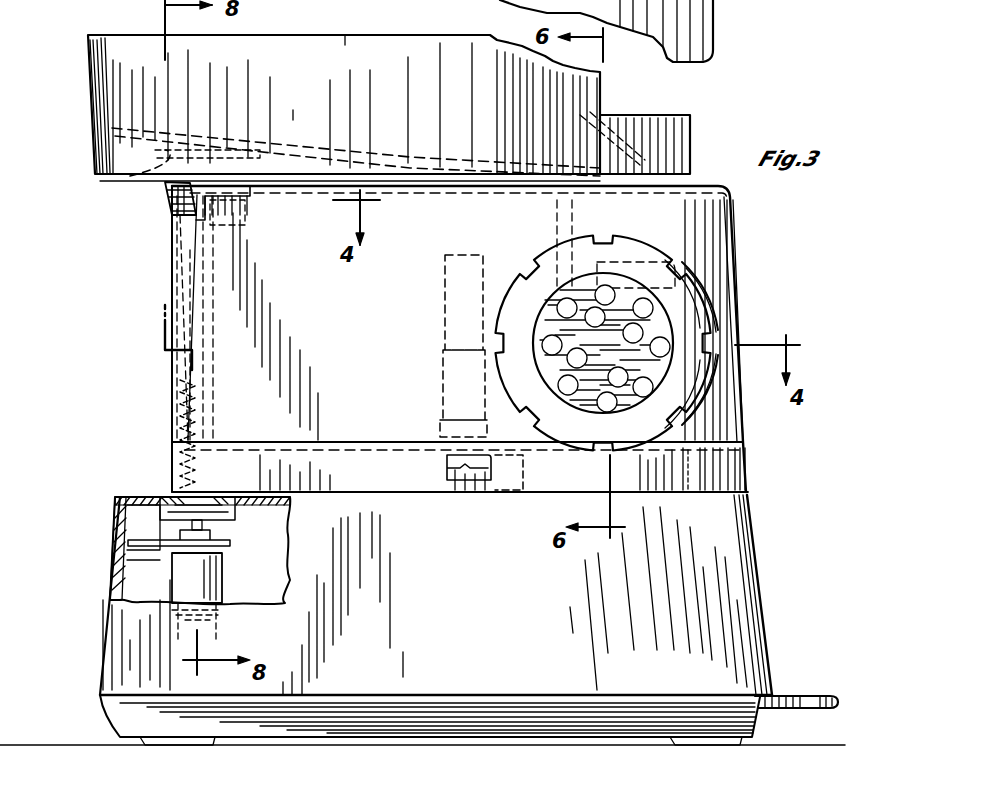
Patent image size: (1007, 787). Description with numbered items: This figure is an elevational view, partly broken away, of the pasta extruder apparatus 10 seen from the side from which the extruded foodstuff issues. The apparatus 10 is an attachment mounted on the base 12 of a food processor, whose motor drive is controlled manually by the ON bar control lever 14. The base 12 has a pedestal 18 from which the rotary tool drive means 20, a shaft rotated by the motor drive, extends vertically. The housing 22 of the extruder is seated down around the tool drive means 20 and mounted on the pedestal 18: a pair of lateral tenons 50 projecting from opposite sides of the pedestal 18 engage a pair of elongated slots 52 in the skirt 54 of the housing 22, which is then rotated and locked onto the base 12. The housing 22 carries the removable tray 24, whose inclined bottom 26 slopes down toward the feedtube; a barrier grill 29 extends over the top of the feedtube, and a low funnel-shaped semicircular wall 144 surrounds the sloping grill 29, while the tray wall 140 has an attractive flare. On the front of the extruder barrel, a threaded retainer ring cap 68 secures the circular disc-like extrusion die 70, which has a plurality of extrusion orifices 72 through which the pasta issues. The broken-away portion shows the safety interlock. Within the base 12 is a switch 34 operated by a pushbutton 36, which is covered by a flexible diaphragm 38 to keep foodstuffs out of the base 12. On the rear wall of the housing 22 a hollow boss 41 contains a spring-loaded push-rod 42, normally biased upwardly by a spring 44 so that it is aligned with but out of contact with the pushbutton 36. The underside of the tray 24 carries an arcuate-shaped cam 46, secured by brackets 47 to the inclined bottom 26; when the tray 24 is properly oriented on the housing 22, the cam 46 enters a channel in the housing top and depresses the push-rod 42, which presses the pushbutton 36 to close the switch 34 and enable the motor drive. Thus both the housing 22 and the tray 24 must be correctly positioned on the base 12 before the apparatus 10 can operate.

The pasta extruder apparatus 10 is at (805, 258).
The base 12 is at (772, 602).
The "ON" bar control lever 14 is at (825, 696).
The pedestal 18 is at (685, 490).
The rotary tool drive means 20 is at (445, 312).
The housing 22 is at (743, 314).
The removable tray 24 is at (85, 120).
The inclined bottom 26 is at (296, 150).
The barrier grill 29 is at (625, 132).
The switch 34 is at (210, 585).
The pushbutton 36 is at (205, 527).
The flexible diaphragm 38 is at (210, 508).
The hollow boss 41 is at (165, 280).
The push-rod 42 is at (170, 495).
The spring 44 is at (178, 395).
The arcuate-shaped cam 46 is at (168, 195).
The brackets 47 is at (130, 176).
The lateral tenons 50 is at (450, 462).
The elongated slots 52 is at (510, 470).
The skirt 54 is at (748, 475).
The threaded retainer ring cap 68 is at (715, 32).
The extrusion die 70 is at (590, 400).
The extrusion orifices 72 is at (648, 330).
The tray wall 140 is at (345, 35).
The funnel-shaped semicircular wall 144 is at (690, 125).